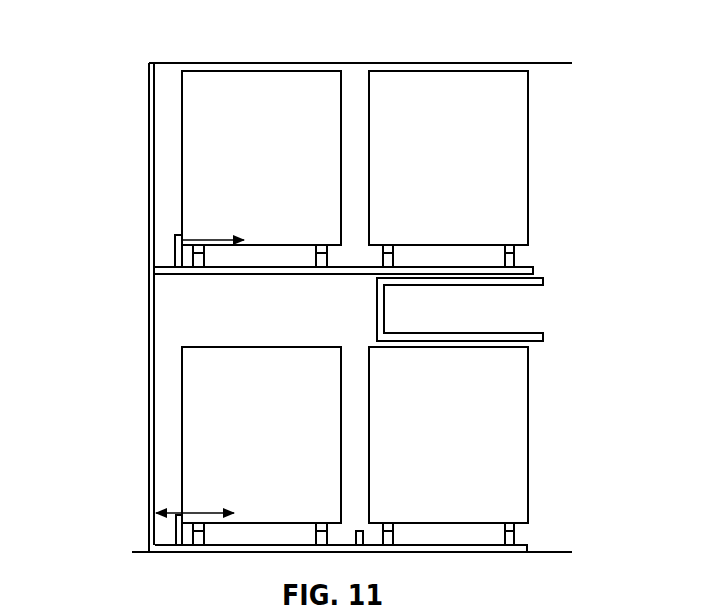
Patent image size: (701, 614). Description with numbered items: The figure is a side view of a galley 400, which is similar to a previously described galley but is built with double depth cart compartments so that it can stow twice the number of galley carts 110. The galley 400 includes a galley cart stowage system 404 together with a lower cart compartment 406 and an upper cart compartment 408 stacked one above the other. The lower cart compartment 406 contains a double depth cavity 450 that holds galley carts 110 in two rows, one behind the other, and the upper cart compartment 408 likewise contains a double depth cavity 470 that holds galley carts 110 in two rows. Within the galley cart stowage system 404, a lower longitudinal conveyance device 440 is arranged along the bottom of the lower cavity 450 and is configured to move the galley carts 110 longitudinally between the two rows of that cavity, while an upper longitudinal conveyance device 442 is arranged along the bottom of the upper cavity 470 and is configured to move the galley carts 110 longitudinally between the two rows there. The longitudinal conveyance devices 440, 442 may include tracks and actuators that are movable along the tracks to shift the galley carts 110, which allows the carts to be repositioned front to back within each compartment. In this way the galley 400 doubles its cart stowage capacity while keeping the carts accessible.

The galley 400 is at (461, 49).
The galley cart stowage system 404 is at (169, 91).
The lower cart compartment 406 is at (171, 469).
The upper cart compartment 408 is at (169, 208).
The lower longitudinal conveyance device 440 is at (169, 531).
The upper longitudinal conveyance device 442 is at (169, 258).
The double depth cavity 450 is at (171, 400).
The double depth cavity 470 is at (169, 140).
The galley cart 110 is at (222, 191).